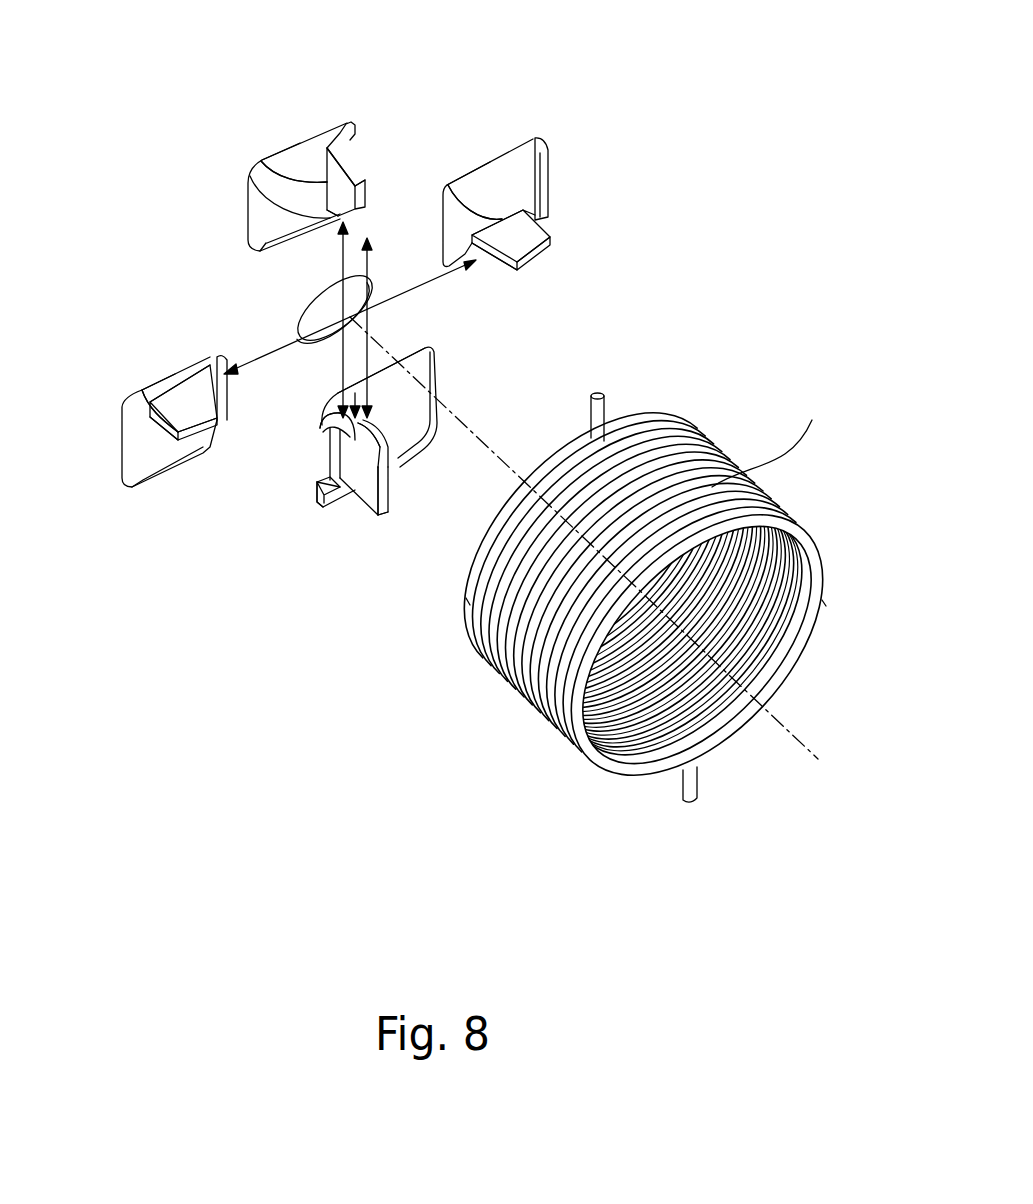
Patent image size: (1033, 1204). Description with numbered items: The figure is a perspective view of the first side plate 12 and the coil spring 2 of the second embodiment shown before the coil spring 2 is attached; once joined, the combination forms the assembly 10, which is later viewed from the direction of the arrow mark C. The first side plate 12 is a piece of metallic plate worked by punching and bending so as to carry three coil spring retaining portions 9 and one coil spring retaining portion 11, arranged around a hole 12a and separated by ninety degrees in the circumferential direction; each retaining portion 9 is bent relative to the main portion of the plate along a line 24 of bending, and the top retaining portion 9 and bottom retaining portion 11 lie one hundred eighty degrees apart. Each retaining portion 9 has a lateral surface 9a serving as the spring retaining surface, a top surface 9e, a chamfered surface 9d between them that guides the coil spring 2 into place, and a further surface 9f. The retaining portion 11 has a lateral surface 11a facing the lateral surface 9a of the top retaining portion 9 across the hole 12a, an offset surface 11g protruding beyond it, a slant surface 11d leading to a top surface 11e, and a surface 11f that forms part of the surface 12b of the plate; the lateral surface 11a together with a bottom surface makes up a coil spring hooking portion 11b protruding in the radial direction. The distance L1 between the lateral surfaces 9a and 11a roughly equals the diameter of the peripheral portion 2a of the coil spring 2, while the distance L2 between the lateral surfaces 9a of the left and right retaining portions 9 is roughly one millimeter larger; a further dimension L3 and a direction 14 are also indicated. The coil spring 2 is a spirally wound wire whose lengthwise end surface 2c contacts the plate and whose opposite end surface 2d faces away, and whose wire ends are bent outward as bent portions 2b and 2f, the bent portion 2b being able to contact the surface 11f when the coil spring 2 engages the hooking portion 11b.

The coil spring 2 is at (512, 712).
The peripheral portion 2a is at (777, 439).
The bent portion 2b is at (603, 387).
The end surface 2c is at (468, 608).
The end surface 2d is at (836, 615).
The bent portion 2f is at (690, 806).
The coil spring retaining portion 9 is at (327, 92).
The lateral surface 9a is at (337, 181).
The chamfered surface 9d is at (353, 220).
The top surface 9e is at (363, 197).
The side wall portion 9f is at (308, 183).
The assembly 10 is at (388, 860).
The coil spring retaining portion 11 is at (368, 568).
The lateral surface 11a is at (322, 436).
The coil spring hooking portion 11b is at (405, 428).
The slant surface 11d is at (396, 480).
The top surface 11e is at (386, 517).
The surface 11f is at (352, 495).
The offset surface 11g is at (412, 455).
The first side plate 12 is at (262, 665).
The hole 12a is at (310, 305).
The surface 12b is at (160, 645).
The axis line 14 is at (165, 280).
The line of bending 24 is at (500, 215).
The distance L1 is at (325, 393).
The distance L2 is at (262, 326).
The direction L3 is at (370, 327).
The arrow mark C is at (512, 760).